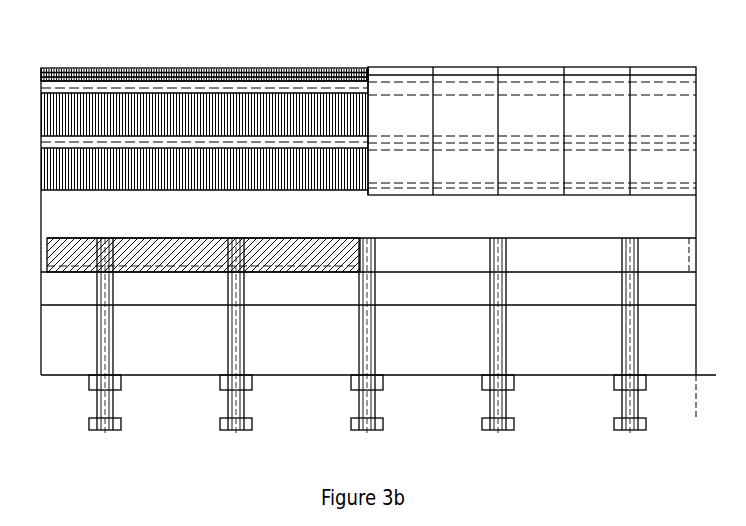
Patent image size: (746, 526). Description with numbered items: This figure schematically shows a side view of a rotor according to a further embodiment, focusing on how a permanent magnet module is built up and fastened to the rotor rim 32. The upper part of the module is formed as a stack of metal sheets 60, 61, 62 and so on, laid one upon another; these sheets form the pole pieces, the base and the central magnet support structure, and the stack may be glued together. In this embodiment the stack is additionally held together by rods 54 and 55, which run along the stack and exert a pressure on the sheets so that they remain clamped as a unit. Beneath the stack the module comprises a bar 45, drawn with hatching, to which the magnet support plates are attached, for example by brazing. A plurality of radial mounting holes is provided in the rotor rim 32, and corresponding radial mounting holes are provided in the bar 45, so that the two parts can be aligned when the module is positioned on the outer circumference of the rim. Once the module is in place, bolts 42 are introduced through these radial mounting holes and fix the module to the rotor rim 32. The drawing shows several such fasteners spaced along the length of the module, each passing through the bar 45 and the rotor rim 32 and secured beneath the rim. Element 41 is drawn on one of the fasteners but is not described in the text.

The rotor rim 32 is at (65, 352).
The bolt 41 is at (108, 361).
The bolt 42 is at (108, 428).
The bar 45 is at (75, 250).
The rod 54 is at (167, 90).
The rod 55 is at (143, 148).
The metal sheet 60 is at (41, 70).
The metal sheet 61 is at (43, 70).
The metal sheet 62 is at (45, 70).